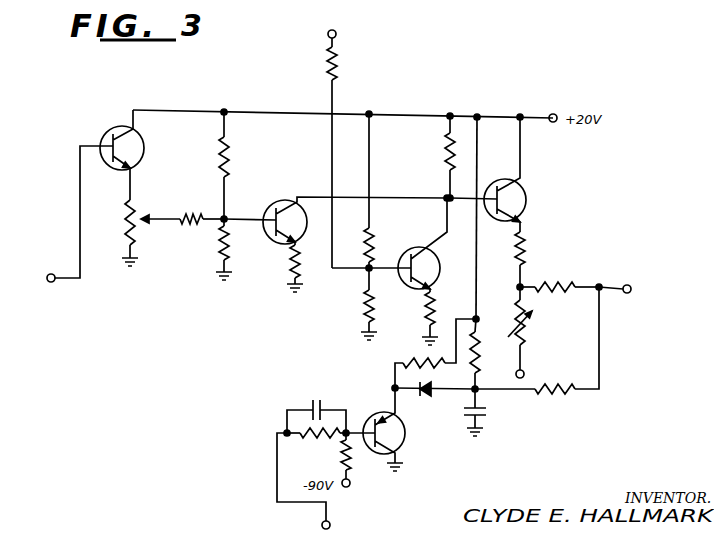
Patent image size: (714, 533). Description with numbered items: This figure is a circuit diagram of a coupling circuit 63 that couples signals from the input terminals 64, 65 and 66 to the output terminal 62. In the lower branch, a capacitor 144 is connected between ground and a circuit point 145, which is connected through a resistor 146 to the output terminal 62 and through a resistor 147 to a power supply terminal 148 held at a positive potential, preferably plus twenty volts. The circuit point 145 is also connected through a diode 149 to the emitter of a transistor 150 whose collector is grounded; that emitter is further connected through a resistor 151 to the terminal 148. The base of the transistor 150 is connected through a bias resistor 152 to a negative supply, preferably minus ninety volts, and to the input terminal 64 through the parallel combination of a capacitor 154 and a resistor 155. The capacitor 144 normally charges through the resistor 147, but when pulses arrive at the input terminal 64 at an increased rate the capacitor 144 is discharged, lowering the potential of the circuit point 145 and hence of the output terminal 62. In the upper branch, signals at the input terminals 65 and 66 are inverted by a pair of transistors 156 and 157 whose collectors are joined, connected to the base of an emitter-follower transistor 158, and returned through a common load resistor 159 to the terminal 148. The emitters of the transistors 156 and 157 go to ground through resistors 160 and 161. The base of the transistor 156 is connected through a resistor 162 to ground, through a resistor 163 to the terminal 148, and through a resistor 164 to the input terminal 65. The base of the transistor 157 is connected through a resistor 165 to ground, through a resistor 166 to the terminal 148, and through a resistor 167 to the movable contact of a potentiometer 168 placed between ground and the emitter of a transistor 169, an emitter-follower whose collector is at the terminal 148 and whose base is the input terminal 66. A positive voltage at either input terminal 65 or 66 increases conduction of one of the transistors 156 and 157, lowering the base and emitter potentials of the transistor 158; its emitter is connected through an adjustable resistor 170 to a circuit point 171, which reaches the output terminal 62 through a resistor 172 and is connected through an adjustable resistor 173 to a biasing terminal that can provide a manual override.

The output terminal 62 is at (632, 288).
The amplifier circuit 63 is at (560, 151).
The input terminal 64 is at (333, 520).
The input terminal 65 is at (337, 34).
The input terminal 66 is at (52, 274).
The capacitor 144 is at (478, 421).
The circuit point 145 is at (478, 393).
The resistor 146 is at (578, 381).
The resistor 147 is at (491, 354).
The power supply terminal 148 is at (554, 113).
The diode 149 is at (425, 396).
The transistor 150 is at (407, 437).
The resistor 151 is at (405, 358).
The bias resistor 152 is at (355, 466).
The capacitor 154 is at (330, 380).
The resistor 155 is at (338, 440).
The transistor 156 is at (452, 257).
The transistor 157 is at (308, 198).
The transistor 158 is at (528, 197).
The common load resistor 159 is at (447, 157).
The resistor 160 is at (433, 312).
The resistor 161 is at (290, 262).
The resistor 162 is at (375, 320).
The resistor 163 is at (375, 240).
The resistor 164 is at (338, 63).
The resistor 165 is at (222, 258).
The resistor 166 is at (228, 158).
The resistor 167 is at (182, 235).
The potentiometer 168 is at (137, 205).
The transistor 169 is at (145, 147).
The adjustable resistor 170 is at (530, 262).
The circuit point 171 is at (525, 285).
The resistor 172 is at (575, 287).
The adjustable resistor 173 is at (512, 345).